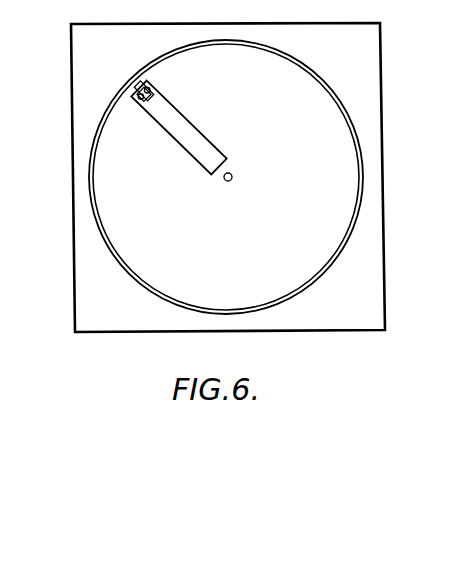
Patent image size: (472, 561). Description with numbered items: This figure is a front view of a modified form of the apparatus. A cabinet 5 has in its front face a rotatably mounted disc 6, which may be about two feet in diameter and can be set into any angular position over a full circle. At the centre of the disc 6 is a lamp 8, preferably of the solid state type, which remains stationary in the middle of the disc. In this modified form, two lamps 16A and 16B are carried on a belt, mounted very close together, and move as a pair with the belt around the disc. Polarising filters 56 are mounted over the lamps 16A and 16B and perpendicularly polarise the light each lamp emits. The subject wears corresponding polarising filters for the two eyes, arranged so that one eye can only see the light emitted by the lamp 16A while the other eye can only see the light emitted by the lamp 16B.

The cabinet 5 is at (282, 321).
The disc 6 is at (142, 278).
The lamp 8 is at (226, 181).
The polarising filters 56 is at (152, 96).
The lamp 16A is at (152, 89).
The lamp 16B is at (134, 92).